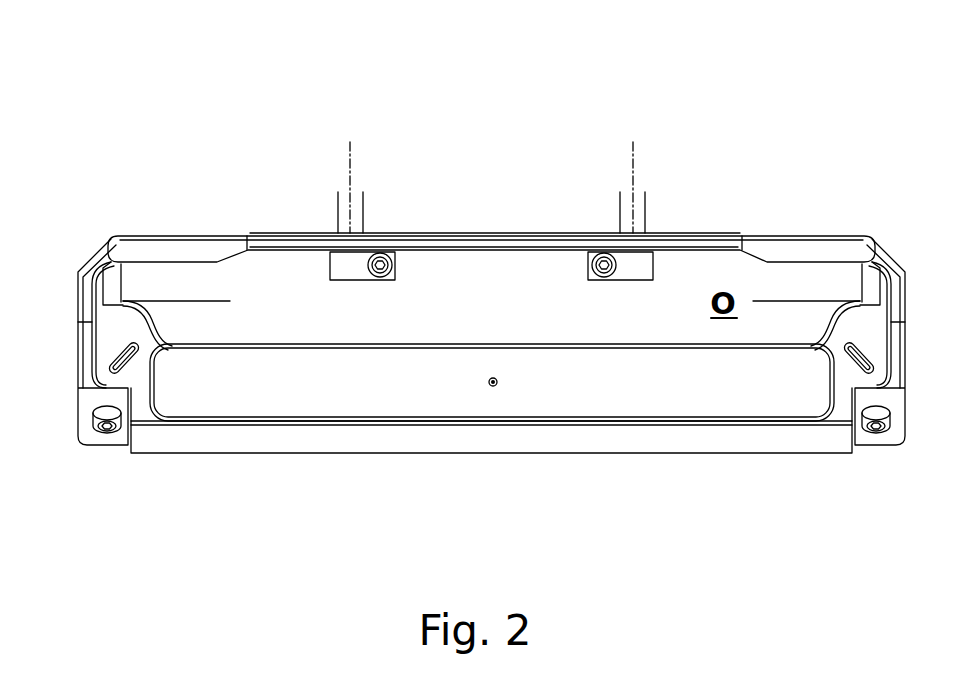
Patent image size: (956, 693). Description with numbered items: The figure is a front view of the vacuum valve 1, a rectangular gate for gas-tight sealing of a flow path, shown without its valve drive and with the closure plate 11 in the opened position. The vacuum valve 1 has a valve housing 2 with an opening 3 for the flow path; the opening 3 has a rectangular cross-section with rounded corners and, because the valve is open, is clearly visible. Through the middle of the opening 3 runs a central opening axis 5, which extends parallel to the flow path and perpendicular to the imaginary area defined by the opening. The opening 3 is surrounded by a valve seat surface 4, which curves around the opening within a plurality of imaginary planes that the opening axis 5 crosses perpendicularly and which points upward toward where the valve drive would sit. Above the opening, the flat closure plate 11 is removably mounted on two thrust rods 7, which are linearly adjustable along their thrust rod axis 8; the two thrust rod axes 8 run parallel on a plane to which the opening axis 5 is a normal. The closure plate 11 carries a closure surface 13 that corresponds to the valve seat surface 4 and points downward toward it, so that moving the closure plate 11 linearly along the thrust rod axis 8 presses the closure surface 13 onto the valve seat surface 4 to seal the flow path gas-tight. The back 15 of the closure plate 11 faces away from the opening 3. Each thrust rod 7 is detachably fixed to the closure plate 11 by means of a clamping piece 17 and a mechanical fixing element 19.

The vacuum valve 1 is at (85, 55).
The valve housing 2 is at (148, 440).
The opening 3 is at (255, 388).
The valve seat surface 4 is at (328, 418).
The opening axis 5 is at (495, 386).
The thrust rod 7 is at (342, 213).
The thrust rod axis 8 is at (350, 169).
The closure plate 11 is at (193, 295).
The closure surface 13 is at (143, 322).
The back 15 is at (792, 295).
The clamping piece 17 is at (357, 263).
The mechanical fixing element 19 is at (378, 256).